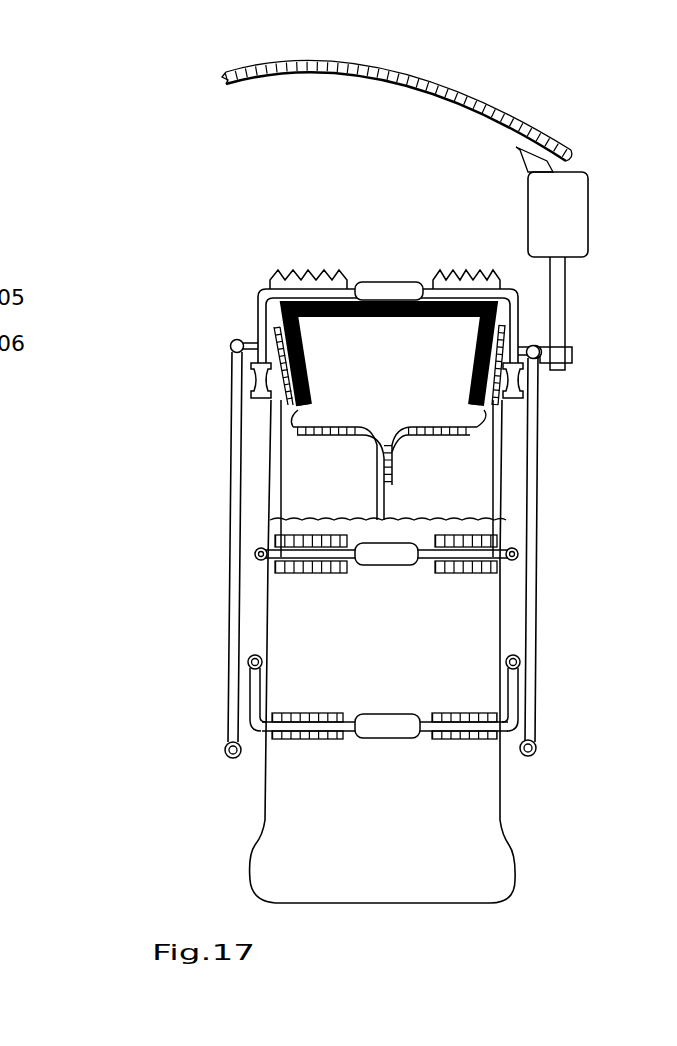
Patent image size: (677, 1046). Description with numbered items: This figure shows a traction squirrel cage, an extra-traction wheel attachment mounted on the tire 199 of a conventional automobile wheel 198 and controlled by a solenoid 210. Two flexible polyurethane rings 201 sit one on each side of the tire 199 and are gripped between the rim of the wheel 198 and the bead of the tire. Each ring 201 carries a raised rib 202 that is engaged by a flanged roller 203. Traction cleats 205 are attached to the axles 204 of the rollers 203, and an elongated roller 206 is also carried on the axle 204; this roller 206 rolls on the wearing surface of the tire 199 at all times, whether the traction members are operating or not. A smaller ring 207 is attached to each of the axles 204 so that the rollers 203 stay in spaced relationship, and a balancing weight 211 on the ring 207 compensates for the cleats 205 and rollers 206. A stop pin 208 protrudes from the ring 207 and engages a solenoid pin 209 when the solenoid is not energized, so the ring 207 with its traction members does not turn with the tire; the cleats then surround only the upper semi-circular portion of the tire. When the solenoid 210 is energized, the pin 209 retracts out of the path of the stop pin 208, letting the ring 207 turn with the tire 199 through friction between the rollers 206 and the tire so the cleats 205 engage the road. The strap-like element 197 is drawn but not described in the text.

The strap 197 is at (517, 112).
The automobile wheel 198 is at (393, 445).
The tire 199 is at (472, 327).
The flexible polyurethane ring 201 is at (262, 335).
The raised rib 202 is at (272, 433).
The flanged roller 203 is at (250, 378).
The axle 204 is at (258, 302).
The traction cleat 205 is at (315, 270).
The elongated roller 206 is at (387, 282).
The smaller ring 207 is at (232, 467).
The stop pin 208 is at (572, 352).
The solenoid pin 209 is at (568, 294).
The solenoid 210 is at (580, 172).
The balancing weight 211 is at (226, 755).